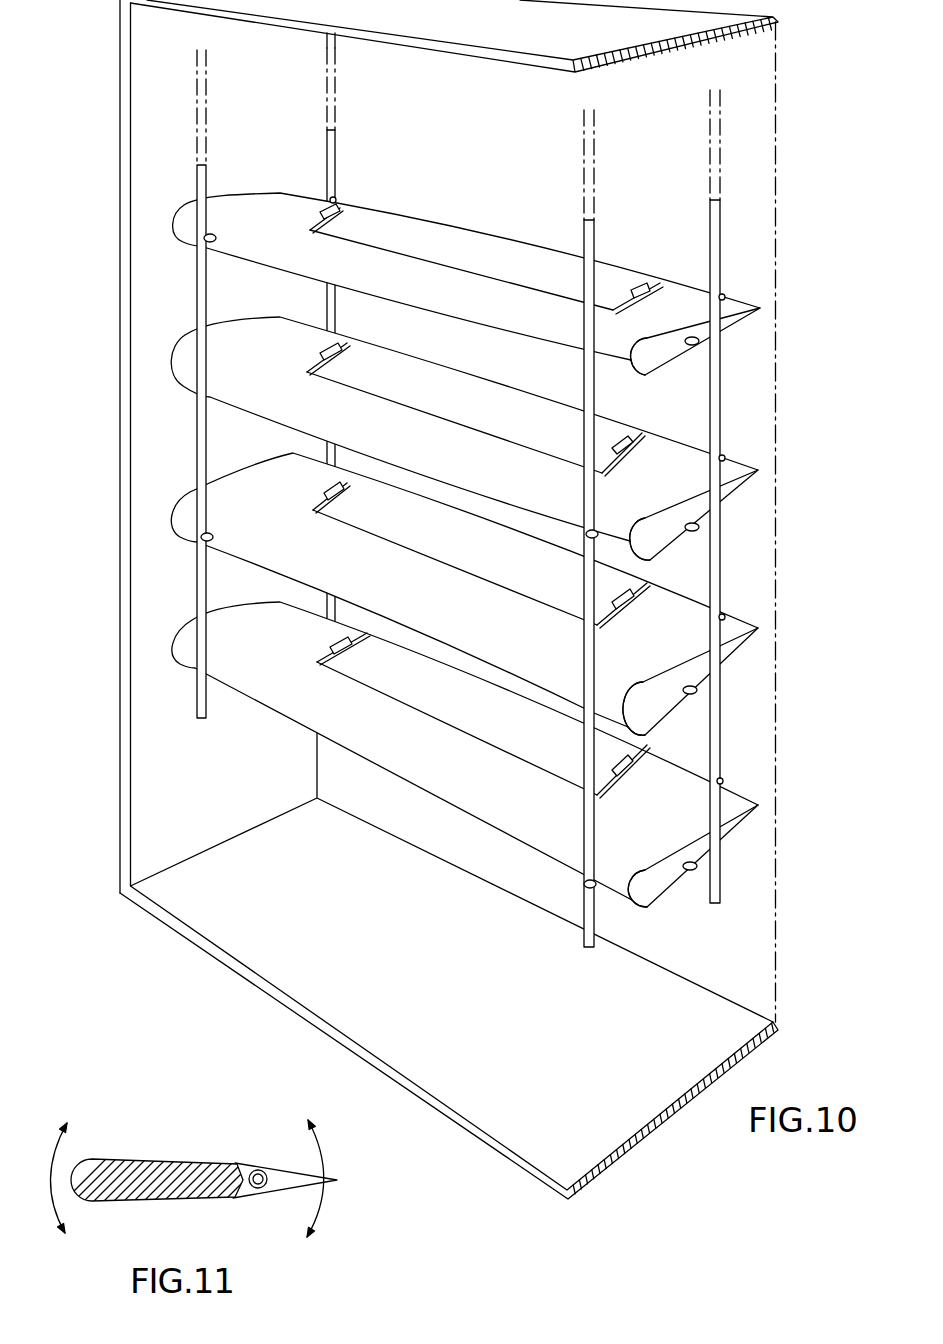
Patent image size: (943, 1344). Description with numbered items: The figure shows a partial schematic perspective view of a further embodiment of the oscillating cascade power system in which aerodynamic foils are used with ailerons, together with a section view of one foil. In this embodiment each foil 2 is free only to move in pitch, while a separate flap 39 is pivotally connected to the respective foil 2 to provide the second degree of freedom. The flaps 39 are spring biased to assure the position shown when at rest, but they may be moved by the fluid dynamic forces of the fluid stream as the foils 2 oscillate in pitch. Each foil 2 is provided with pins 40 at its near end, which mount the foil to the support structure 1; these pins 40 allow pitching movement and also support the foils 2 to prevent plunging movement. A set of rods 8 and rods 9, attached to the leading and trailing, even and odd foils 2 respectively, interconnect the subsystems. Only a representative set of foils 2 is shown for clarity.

In FIG. 10, the support structure 1 is at (388, 955).
In FIG. 10, the foil 2 is at (657, 352).
In FIG. 11, the foil 2 is at (193, 1178).
In FIG. 10, the rod 8 is at (197, 420).
In FIG. 10, the rod 9 is at (523, 336).
In FIG. 10, the flap 39 is at (470, 258).
In FIG. 11, the flap 39 is at (273, 1161).
In FIG. 10, the pin 40 is at (712, 340).